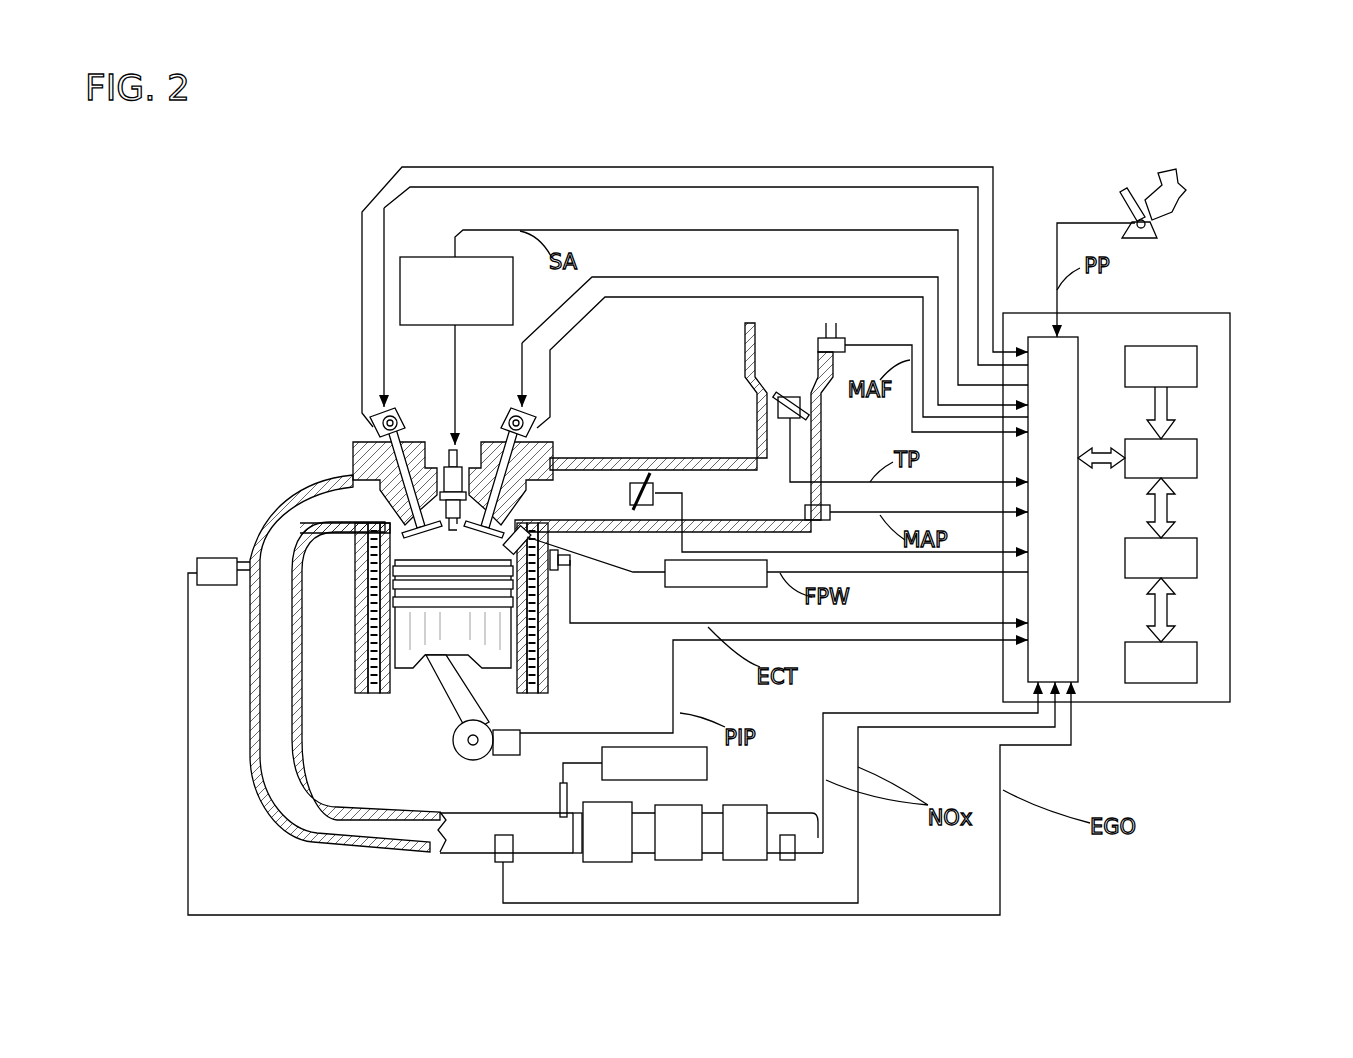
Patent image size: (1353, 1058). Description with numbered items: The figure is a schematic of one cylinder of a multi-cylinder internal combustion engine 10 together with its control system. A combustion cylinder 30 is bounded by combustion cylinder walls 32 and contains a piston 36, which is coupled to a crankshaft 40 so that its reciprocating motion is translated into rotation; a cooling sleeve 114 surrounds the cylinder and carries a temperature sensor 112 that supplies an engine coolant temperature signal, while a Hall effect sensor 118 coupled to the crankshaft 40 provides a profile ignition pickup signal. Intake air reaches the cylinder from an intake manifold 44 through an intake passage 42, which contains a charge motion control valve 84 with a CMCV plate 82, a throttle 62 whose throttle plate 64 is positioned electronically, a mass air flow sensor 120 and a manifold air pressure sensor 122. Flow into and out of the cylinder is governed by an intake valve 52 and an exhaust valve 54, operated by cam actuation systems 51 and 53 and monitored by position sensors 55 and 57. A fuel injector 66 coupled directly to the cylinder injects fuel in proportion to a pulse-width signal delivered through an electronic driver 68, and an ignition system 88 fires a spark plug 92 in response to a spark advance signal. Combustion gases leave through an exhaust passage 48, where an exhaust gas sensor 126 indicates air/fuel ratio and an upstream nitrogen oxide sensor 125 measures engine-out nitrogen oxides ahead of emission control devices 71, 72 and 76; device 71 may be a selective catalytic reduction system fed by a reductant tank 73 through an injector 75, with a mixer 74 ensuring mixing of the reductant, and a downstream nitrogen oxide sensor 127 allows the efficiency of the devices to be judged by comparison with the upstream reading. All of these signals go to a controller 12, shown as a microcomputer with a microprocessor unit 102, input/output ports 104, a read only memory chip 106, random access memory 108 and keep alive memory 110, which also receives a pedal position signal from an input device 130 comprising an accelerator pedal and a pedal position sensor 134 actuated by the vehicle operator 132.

The internal combustion engine 10 is at (290, 395).
The controller 12 is at (1228, 318).
The combustion cylinder 30 is at (432, 540).
The combustion cylinder walls 32 is at (392, 680).
The piston 36 is at (437, 637).
The crankshaft 40 is at (460, 752).
The intake passage 42 is at (775, 371).
The intake manifold 44 is at (713, 504).
The exhaust passage 48 is at (310, 514).
The cam actuation system 51 is at (508, 410).
The intake valve 52 is at (512, 505).
The cam actuation system 53 is at (398, 410).
The exhaust valve 54 is at (398, 505).
The position sensor 55 is at (530, 437).
The position sensor 57 is at (378, 430).
The throttle 62 is at (800, 405).
The throttle plate 64 is at (770, 400).
The fuel injector 66 is at (530, 545).
The electronic driver 68 is at (693, 587).
The emission control device 71 is at (594, 843).
The emission control device 72 is at (666, 843).
The reductant tank 73 is at (641, 775).
The mixer 74 is at (578, 856).
The injector 75 is at (568, 800).
The emission control device 76 is at (733, 843).
The CMCV plate 82 is at (628, 490).
The charge motion control valve 84 is at (647, 503).
The ignition system 88 is at (445, 257).
The spark plug 92 is at (462, 447).
The microprocessor unit 102 is at (1197, 460).
The input/output ports 104 is at (1078, 350).
The read only memory chip 106 is at (1197, 365).
The random access memory 108 is at (1197, 560).
The keep alive memory 110 is at (1197, 663).
The temperature sensor 112 is at (570, 572).
The cooling sleeve 114 is at (540, 665).
The Hall effect sensor 118 is at (508, 758).
The mass air flow sensor 120 is at (832, 338).
The manifold air pressure sensor 122 is at (825, 520).
The NOx sensor 125 is at (505, 862).
The exhaust gas sensor 126 is at (197, 562).
The NOx sensor 127 is at (790, 862).
The input device 130 is at (1128, 205).
The vehicle operator 132 is at (1175, 195).
The pedal position sensor 134 is at (1160, 223).